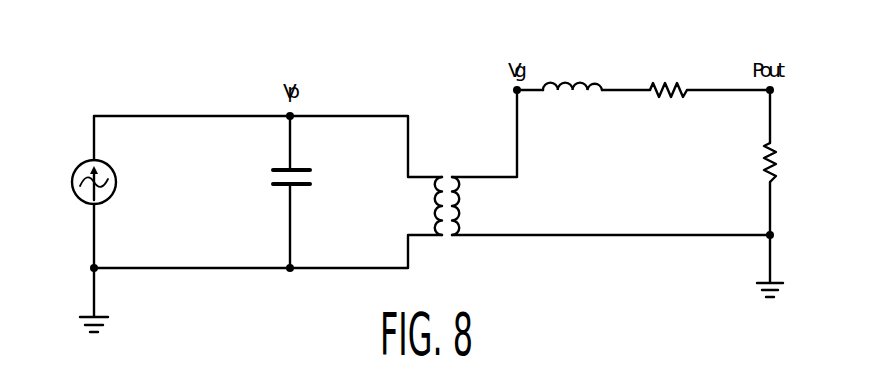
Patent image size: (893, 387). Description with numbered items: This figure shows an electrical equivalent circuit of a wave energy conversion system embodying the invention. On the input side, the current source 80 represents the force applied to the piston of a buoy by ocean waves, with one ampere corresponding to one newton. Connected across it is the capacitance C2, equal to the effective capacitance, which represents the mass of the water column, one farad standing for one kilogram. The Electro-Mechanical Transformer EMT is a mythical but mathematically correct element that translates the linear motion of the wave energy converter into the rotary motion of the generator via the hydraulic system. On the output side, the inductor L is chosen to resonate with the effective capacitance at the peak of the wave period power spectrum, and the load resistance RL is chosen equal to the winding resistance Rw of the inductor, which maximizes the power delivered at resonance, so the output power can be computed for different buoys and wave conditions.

The current source 80 is at (72, 185).
The capacitance C2 is at (303, 187).
The Electro-Mechanical Transformer EMT is at (448, 190).
The inductor L is at (572, 61).
The winding resistance Rw is at (668, 65).
The load resistance RL is at (784, 162).